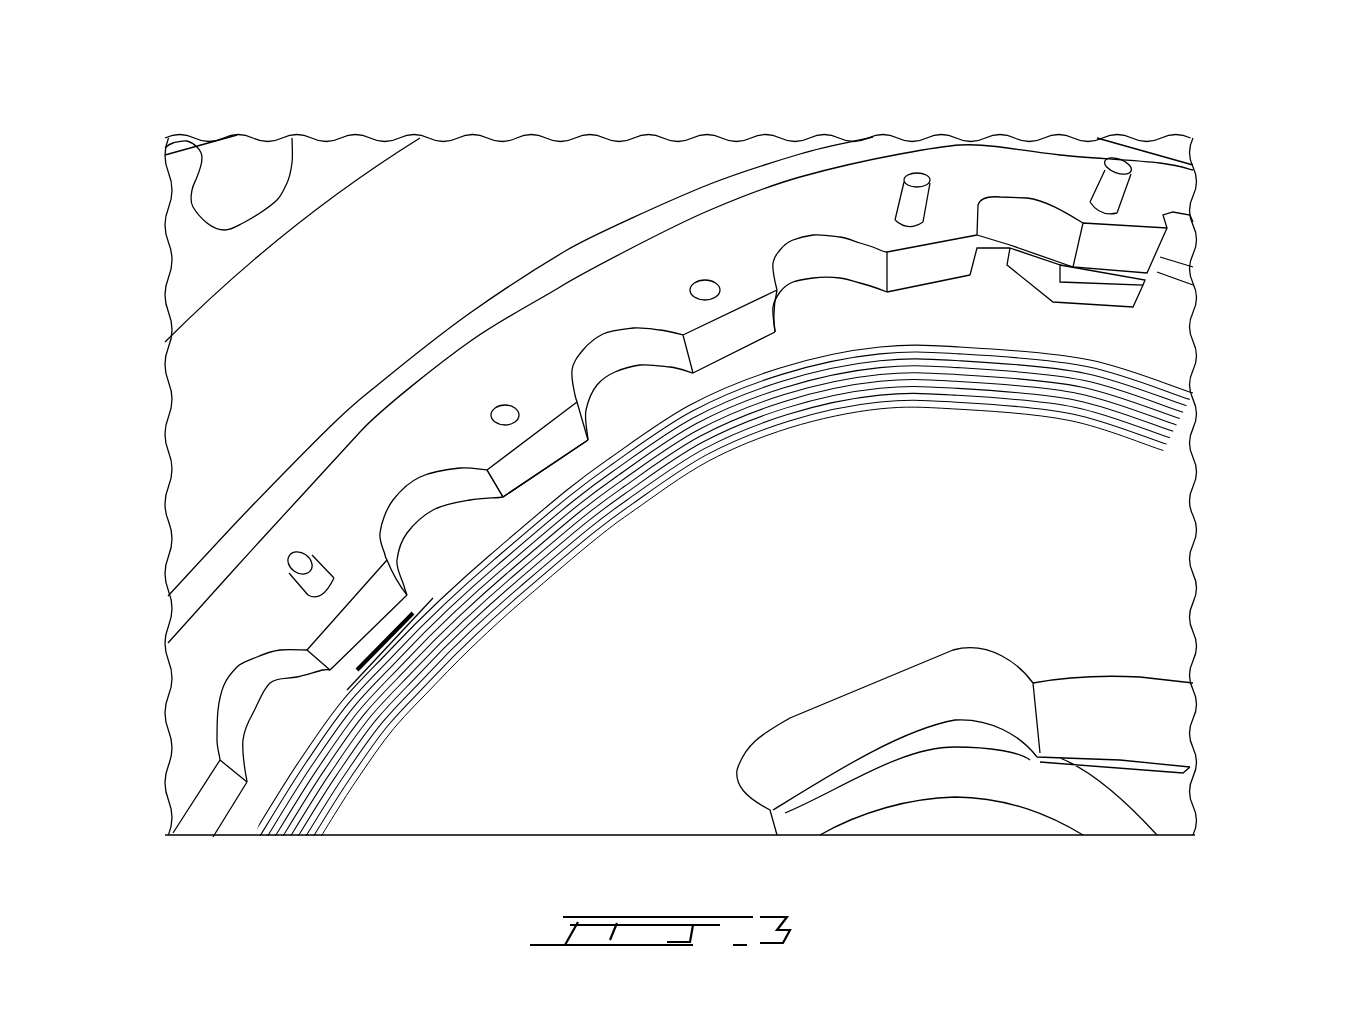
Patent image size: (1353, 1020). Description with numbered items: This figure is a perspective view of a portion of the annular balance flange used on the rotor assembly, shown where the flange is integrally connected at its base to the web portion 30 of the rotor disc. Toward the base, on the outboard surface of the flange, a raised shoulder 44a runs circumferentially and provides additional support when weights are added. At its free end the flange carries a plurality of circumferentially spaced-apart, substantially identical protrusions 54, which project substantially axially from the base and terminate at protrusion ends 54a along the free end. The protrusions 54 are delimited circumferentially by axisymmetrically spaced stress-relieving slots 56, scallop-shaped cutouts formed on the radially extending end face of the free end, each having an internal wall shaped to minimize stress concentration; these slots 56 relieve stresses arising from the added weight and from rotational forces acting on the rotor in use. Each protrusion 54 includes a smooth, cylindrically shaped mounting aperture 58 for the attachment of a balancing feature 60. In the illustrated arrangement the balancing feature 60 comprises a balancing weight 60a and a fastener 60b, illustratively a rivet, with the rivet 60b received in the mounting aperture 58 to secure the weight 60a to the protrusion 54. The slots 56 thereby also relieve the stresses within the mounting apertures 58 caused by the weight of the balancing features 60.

The web portion 30 is at (313, 783).
The raised shoulder 44a is at (428, 360).
The protrusions 54 is at (700, 265).
The protrusion ends 54a is at (513, 473).
The stress-relieving slots 56 is at (1007, 220).
The mounting aperture 58 is at (503, 422).
The balancing feature 60 is at (1157, 300).
The balancing weight 60a is at (1097, 290).
The fastener 60b is at (1115, 183).